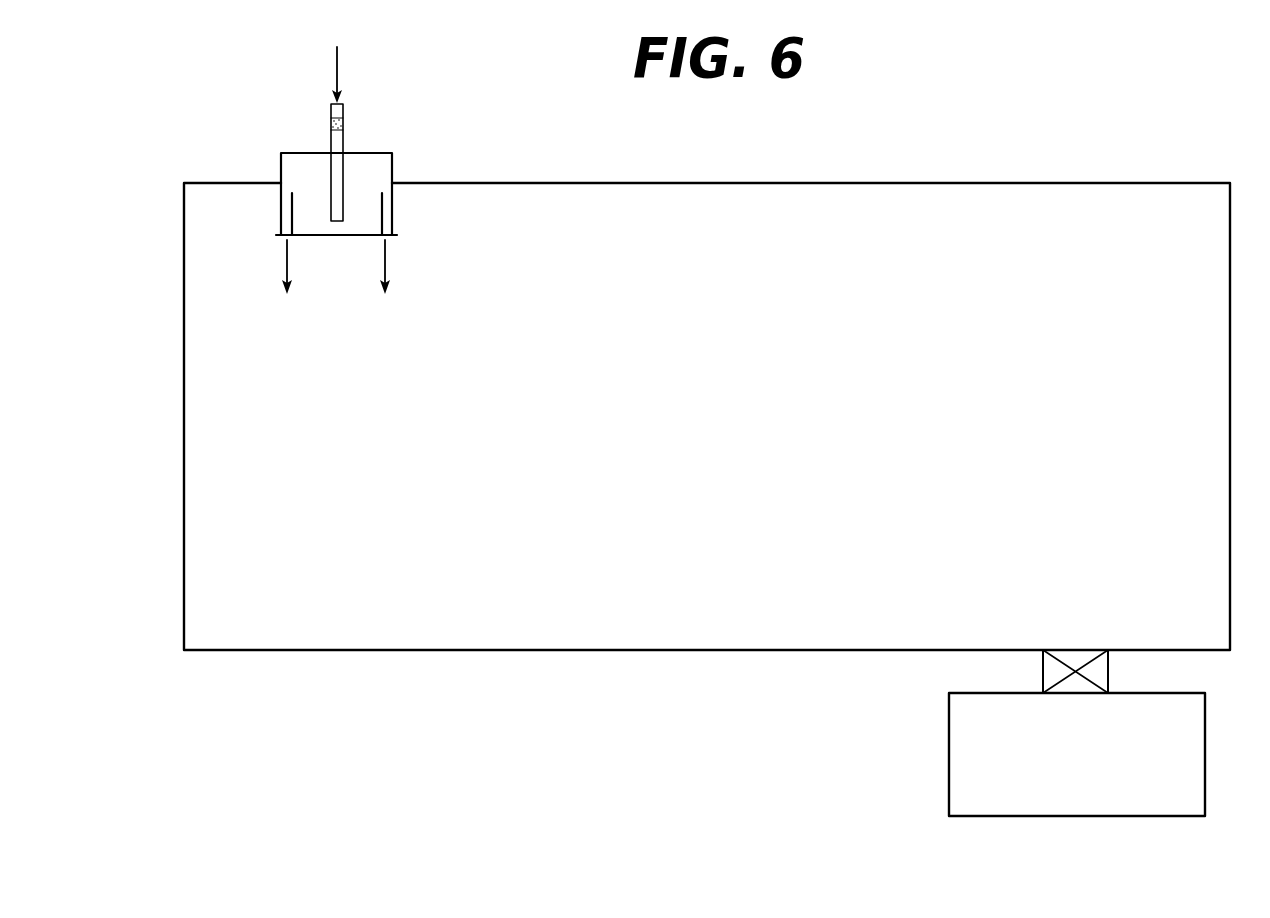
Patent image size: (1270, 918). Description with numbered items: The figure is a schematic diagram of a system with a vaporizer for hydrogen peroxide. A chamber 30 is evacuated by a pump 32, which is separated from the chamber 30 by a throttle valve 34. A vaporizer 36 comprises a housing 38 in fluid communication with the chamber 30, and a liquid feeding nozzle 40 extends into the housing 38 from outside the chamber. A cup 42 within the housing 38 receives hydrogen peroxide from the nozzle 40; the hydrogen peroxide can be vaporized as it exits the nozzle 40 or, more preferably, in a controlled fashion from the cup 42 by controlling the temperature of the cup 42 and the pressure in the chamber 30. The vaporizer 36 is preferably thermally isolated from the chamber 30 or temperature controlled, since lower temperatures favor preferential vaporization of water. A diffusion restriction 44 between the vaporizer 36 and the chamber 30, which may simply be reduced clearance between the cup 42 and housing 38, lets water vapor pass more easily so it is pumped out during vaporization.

The chamber 30 is at (1027, 182).
The pump 32 is at (942, 755).
The throttle valve 34 is at (1015, 667).
The vaporizer 36 is at (441, 142).
The housing 38 is at (281, 165).
The liquid feeding nozzle 40 is at (344, 124).
The cup 42 is at (336, 237).
The diffusion restriction 44 is at (393, 219).